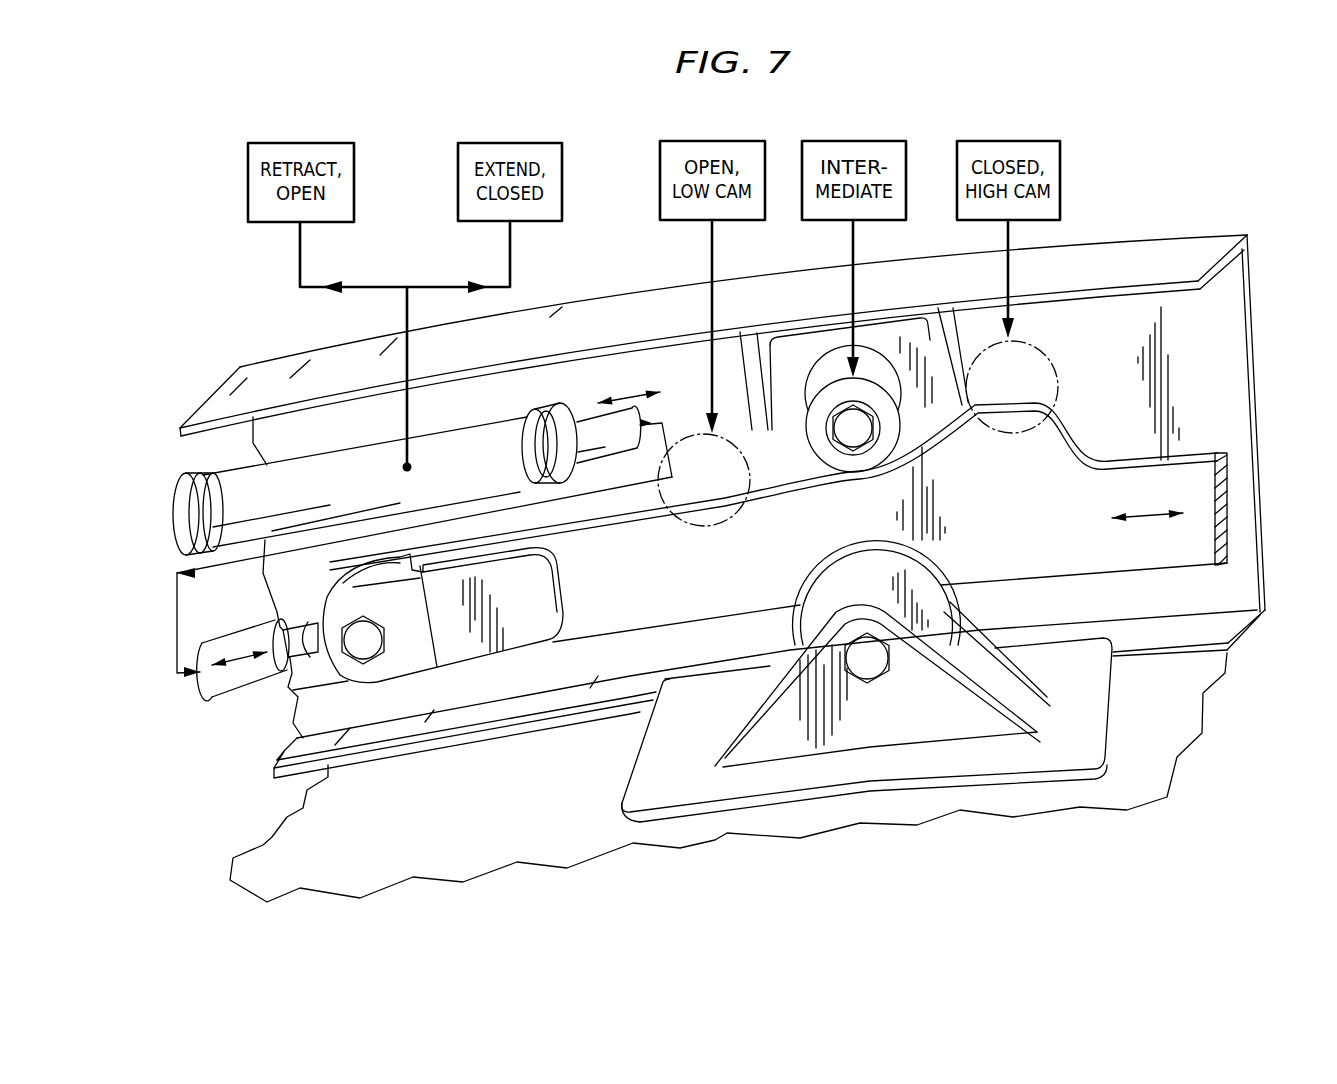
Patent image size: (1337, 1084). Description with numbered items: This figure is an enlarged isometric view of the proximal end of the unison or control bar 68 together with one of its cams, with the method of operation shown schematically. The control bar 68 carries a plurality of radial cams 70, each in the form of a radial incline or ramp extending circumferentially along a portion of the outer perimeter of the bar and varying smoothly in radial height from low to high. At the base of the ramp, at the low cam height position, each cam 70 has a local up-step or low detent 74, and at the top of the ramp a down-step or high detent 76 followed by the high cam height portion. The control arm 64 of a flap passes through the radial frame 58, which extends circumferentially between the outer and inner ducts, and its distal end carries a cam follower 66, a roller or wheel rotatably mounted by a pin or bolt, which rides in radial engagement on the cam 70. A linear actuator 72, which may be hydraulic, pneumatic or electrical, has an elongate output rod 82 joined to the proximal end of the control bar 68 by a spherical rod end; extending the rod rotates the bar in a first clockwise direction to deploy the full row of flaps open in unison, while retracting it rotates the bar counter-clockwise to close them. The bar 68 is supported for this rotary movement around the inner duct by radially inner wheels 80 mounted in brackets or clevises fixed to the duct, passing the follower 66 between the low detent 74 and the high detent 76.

The radial frame 58 is at (1256, 337).
The control arm 64 is at (797, 386).
The cam follower 66 is at (853, 470).
The control bar 68 is at (1228, 500).
The radial cam 70 is at (913, 433).
The linear actuator 72 is at (357, 491).
The low detent 74 is at (728, 500).
The high detent 76 is at (983, 403).
The inner wheel 80 is at (881, 594).
The output rod 82 is at (238, 631).